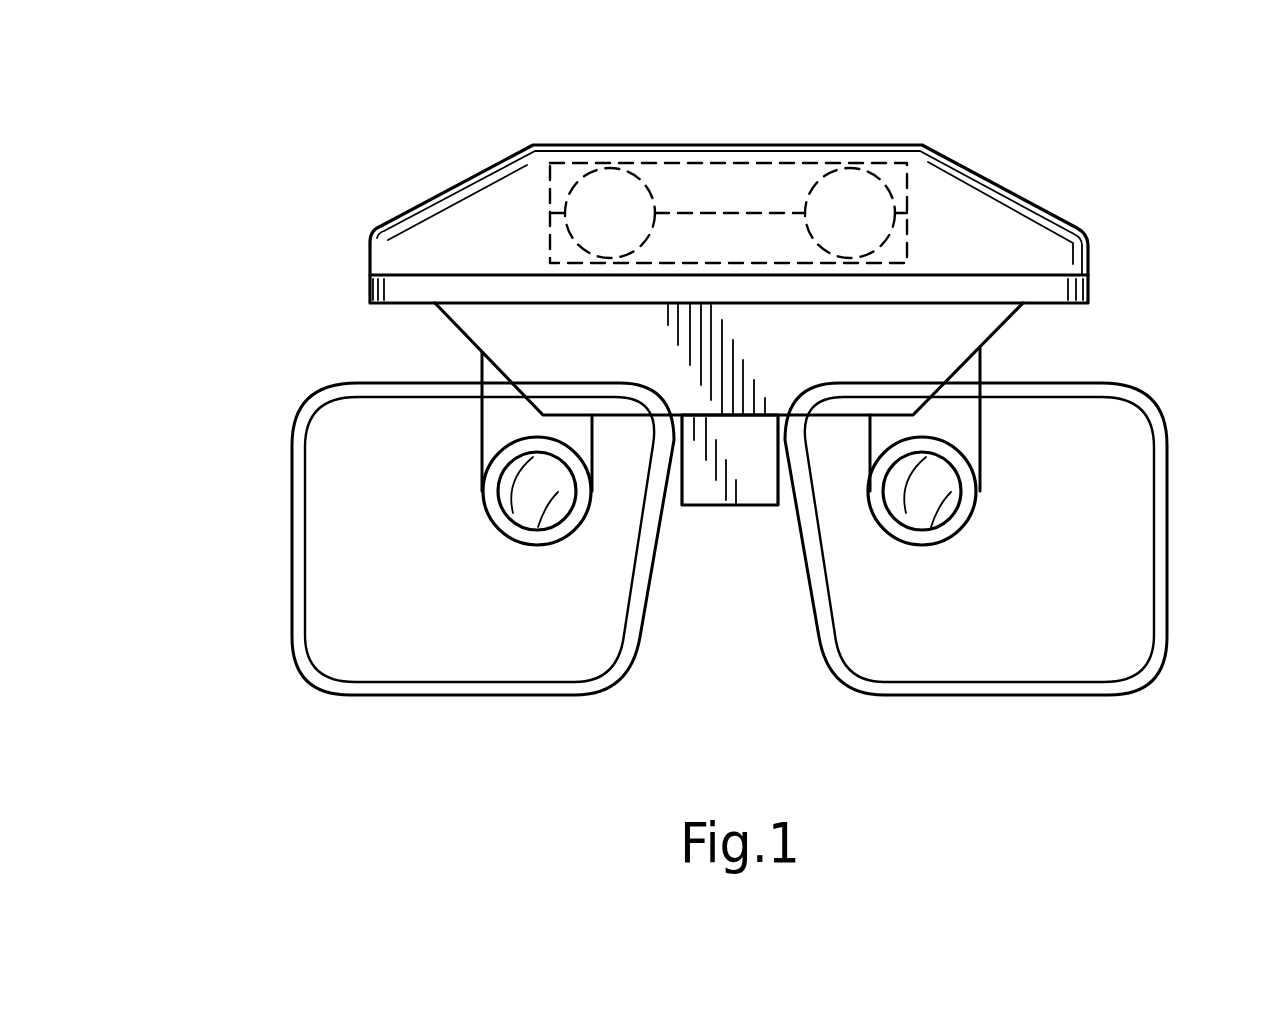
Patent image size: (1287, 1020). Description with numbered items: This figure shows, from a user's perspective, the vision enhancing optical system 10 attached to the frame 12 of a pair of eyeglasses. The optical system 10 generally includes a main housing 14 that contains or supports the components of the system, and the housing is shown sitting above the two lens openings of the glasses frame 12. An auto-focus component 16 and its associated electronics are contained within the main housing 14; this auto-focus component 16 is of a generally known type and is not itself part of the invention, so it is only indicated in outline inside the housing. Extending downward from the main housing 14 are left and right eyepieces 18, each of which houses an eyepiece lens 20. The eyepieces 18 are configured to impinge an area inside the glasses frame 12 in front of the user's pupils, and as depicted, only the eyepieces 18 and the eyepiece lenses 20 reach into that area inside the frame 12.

The vision enhancing optical system 10 is at (737, 378).
The frame 12 is at (1163, 473).
The main housing 14 is at (373, 232).
The auto-focus component 16 is at (517, 203).
The eyepiece 18 is at (482, 372).
The eyepiece lens 20 is at (532, 495).